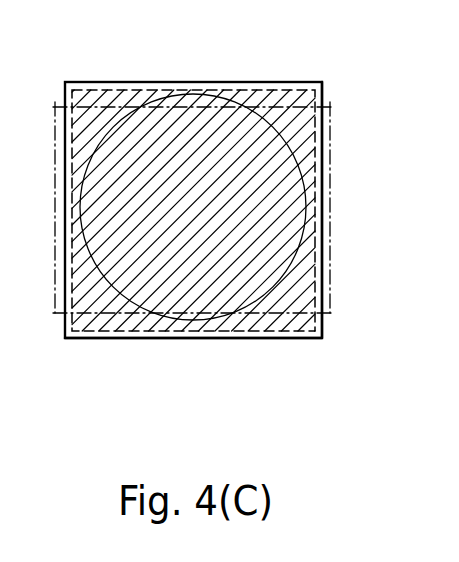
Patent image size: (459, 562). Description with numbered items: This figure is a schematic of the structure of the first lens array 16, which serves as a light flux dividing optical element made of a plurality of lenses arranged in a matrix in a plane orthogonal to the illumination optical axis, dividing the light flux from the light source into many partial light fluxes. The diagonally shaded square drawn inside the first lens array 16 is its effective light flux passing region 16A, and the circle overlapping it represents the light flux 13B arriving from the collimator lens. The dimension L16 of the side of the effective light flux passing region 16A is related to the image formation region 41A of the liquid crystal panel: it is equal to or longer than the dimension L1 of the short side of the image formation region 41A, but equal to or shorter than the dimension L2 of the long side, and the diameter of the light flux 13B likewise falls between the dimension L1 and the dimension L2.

The first lens array 16 is at (123, 82).
The effective light flux passing region 16A is at (222, 87).
The image formation region 41A is at (284, 140).
The light flux 13B is at (128, 300).
The dimension of the short side of the image formation region L1 is at (332, 206).
The dimension of the long side of the image formation region L2 is at (296, 322).
The dimension of the side of the effective light flux passing region L16 is at (332, 125).